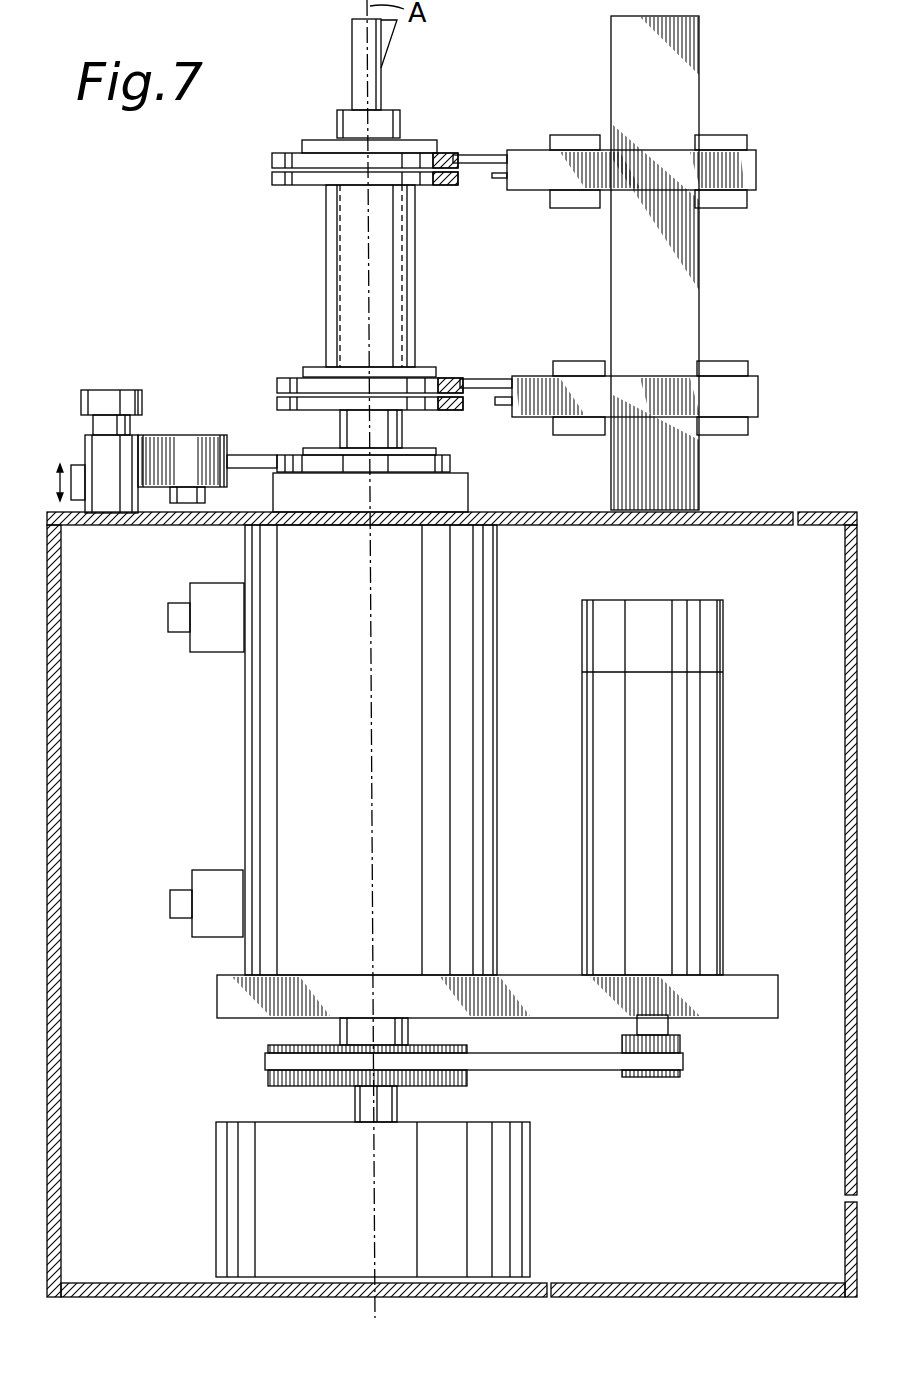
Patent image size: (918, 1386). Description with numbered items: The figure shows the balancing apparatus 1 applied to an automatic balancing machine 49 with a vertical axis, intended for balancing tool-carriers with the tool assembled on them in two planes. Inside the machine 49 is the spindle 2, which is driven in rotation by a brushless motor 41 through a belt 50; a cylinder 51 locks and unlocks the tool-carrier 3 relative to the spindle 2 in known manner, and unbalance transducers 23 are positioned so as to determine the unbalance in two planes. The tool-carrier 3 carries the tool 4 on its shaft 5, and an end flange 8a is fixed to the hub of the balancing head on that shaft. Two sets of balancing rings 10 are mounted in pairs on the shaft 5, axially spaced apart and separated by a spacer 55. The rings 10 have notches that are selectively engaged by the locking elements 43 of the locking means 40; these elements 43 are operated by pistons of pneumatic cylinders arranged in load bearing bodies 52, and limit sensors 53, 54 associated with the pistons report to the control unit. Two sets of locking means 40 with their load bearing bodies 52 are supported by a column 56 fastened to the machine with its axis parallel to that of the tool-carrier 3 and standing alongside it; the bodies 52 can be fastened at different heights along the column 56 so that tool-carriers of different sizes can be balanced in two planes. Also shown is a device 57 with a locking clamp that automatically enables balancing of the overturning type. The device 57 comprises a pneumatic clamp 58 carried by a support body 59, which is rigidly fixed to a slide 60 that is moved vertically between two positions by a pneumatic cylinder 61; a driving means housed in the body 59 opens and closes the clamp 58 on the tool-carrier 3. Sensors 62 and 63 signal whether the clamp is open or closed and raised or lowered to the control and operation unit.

The balancing apparatus 1 is at (163, 229).
The spindle 2 is at (455, 493).
The tool-carrier 3 is at (318, 448).
The tool 4 is at (355, 77).
The tool-carrier shaft 5 is at (392, 432).
The end flange 8a is at (431, 367).
The balancing rings 10 is at (272, 161).
The unbalance transducer 23 is at (205, 642).
The locking means 40 is at (638, 263).
The motor 41 is at (600, 878).
The locking elements 43 is at (468, 156).
The machine 49 is at (820, 480).
The belt 50 is at (567, 1063).
The cylinder 51 is at (517, 1200).
The load bearing body 52 is at (665, 157).
The limit sensor 53 is at (558, 135).
The limit sensor 54 is at (718, 140).
The spacer 55 is at (405, 284).
The column 56 is at (700, 328).
The device with locking clamp 57 is at (212, 412).
The pneumatic clamp 58 is at (452, 462).
The support body 59 is at (182, 447).
The slide 60 is at (88, 440).
The pneumatic cylinder 61 is at (108, 400).
The sensor 62 is at (206, 494).
The sensor 63 is at (78, 465).